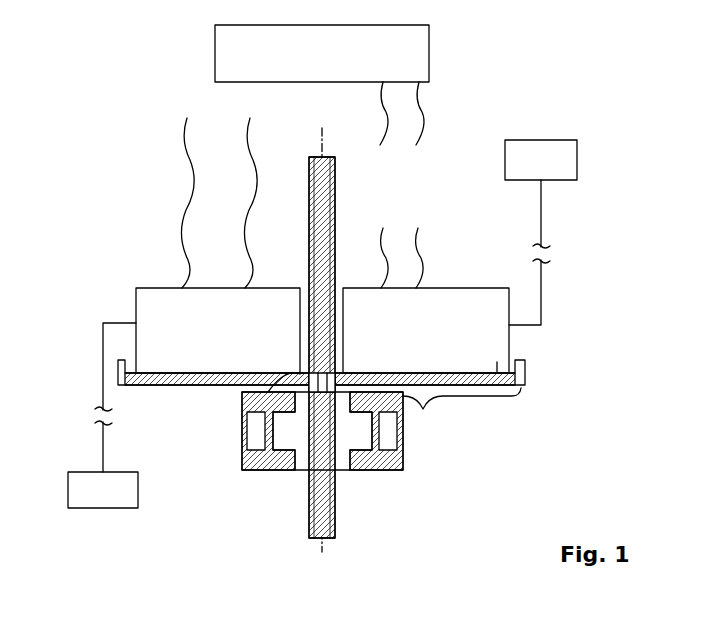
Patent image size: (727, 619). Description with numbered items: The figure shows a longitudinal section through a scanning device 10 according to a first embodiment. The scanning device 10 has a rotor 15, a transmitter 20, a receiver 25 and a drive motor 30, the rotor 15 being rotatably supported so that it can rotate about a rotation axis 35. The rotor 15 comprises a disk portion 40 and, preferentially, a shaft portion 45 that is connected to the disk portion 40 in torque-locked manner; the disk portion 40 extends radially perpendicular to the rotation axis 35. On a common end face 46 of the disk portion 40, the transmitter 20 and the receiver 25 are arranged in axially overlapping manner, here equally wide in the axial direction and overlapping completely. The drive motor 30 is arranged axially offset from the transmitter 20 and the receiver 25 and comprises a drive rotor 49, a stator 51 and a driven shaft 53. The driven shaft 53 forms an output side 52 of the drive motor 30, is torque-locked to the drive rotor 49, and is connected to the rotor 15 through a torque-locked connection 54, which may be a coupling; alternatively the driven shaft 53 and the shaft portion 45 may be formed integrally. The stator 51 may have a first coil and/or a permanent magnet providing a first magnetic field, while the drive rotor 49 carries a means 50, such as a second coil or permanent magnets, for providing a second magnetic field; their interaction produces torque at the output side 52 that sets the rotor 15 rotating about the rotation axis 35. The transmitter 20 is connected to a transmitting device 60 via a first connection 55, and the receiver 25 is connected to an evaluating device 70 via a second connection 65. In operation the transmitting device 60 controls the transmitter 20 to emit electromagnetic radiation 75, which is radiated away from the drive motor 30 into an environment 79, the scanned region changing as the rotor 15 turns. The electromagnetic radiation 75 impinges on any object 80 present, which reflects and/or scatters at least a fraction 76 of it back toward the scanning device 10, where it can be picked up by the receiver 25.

The scanning device 10 is at (532, 82).
The rotor 15 is at (527, 379).
The transmitter 20 is at (224, 304).
The receiver 25 is at (473, 304).
The drive motor 30 is at (403, 456).
The rotation axis 35 is at (318, 140).
The disk portion 40 is at (462, 413).
The shaft portion 45 is at (336, 203).
The common end face 46 is at (497, 373).
The drive rotor 49 is at (340, 465).
The means for making a second magnetic field available 50 is at (276, 452).
The stator 51 is at (247, 430).
The output side 52 is at (270, 392).
The driven shaft 53 is at (318, 378).
The torque-locked connection 54 is at (334, 392).
The first connection 55 is at (103, 441).
The transmitting device 60 is at (103, 508).
The second connection 65 is at (541, 231).
The evaluating device 70 is at (545, 140).
The electromagnetic radiation 75 is at (187, 150).
The fraction of the electromagnetic radiation 76 is at (417, 245).
The environment 79 is at (474, 139).
The object 80 is at (215, 55).